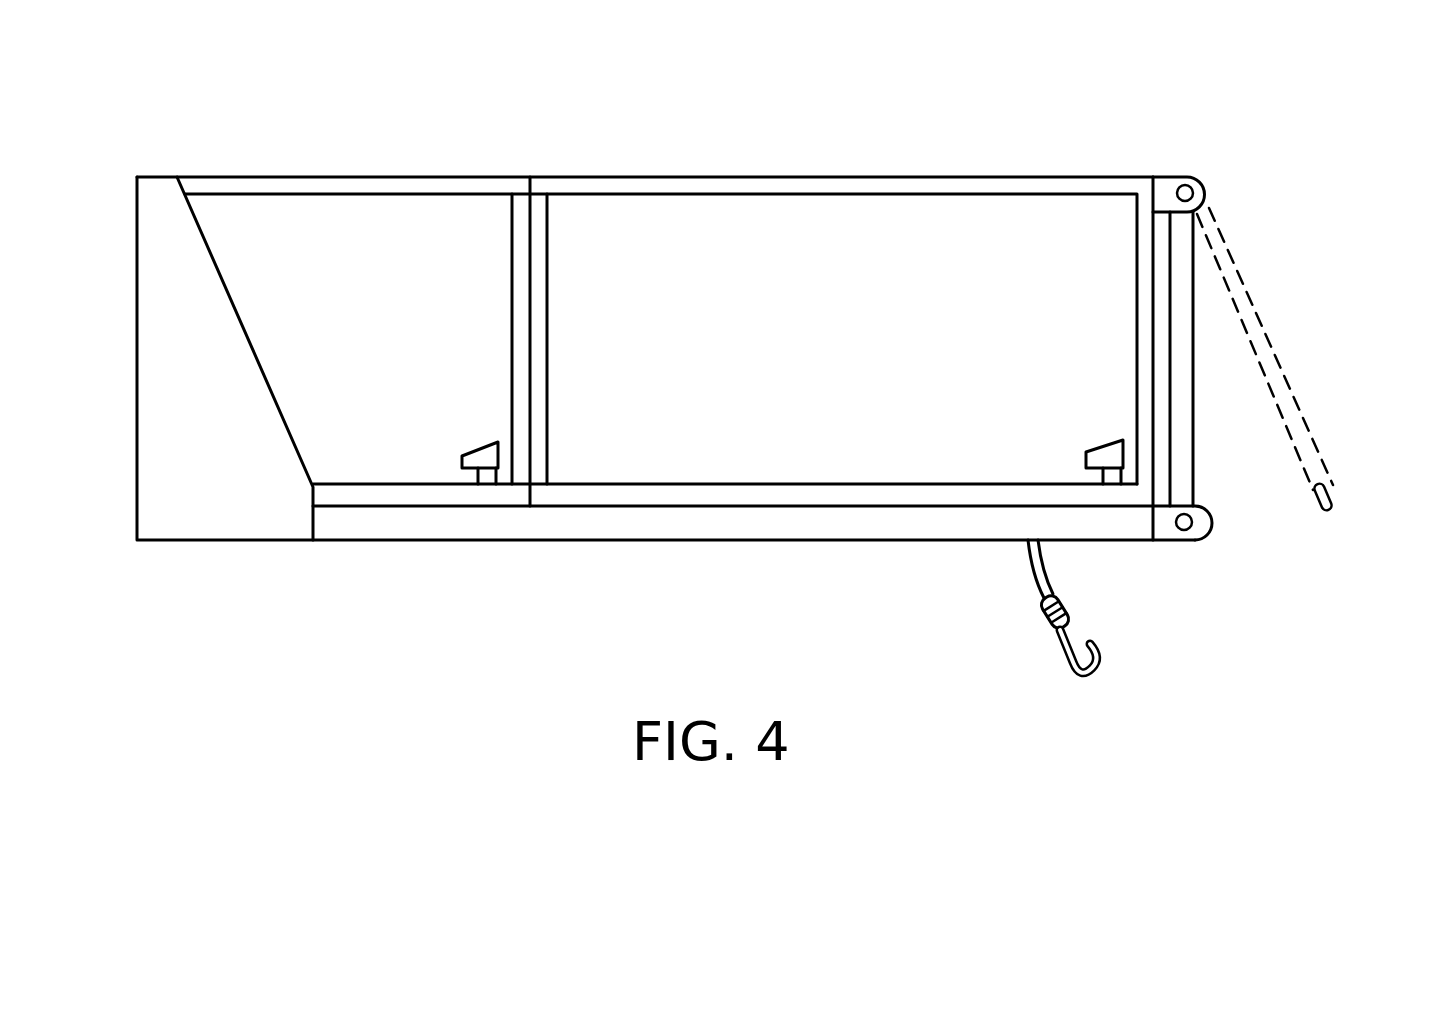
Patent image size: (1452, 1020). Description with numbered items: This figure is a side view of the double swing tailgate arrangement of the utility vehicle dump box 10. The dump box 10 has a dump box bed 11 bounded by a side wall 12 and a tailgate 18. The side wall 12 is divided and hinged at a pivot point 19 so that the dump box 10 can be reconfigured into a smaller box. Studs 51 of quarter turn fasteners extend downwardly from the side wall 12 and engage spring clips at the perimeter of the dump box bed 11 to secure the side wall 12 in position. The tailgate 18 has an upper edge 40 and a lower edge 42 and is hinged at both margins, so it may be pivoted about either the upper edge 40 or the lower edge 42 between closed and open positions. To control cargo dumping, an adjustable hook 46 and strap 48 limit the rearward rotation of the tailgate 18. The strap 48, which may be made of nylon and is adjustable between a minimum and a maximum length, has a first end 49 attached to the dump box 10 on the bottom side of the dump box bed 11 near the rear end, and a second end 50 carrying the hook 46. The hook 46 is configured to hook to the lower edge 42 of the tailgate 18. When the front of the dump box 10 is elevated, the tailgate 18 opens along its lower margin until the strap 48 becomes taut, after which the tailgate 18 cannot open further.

The utility vehicle dump box 10 is at (871, 92).
The dump box bed 11 is at (735, 540).
The first side wall 12 is at (653, 440).
The tailgate 18 is at (1180, 302).
The pivot point 19 is at (535, 217).
The upper edge 40 is at (1199, 182).
The lower edge 42 is at (1329, 500).
The adjustable hook 46 is at (1078, 682).
The strap 48 is at (1031, 578).
The first end 49 is at (1027, 540).
The second end 50 is at (1073, 620).
The stud 51 is at (483, 455).